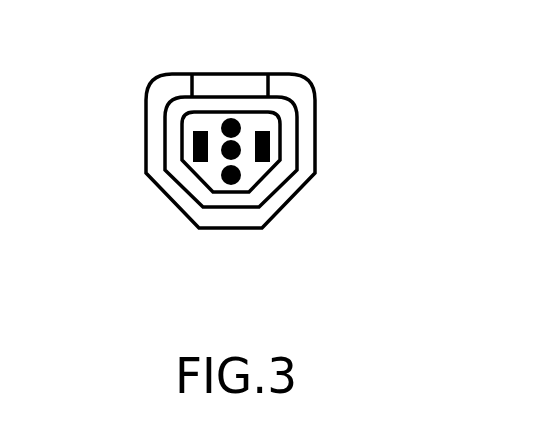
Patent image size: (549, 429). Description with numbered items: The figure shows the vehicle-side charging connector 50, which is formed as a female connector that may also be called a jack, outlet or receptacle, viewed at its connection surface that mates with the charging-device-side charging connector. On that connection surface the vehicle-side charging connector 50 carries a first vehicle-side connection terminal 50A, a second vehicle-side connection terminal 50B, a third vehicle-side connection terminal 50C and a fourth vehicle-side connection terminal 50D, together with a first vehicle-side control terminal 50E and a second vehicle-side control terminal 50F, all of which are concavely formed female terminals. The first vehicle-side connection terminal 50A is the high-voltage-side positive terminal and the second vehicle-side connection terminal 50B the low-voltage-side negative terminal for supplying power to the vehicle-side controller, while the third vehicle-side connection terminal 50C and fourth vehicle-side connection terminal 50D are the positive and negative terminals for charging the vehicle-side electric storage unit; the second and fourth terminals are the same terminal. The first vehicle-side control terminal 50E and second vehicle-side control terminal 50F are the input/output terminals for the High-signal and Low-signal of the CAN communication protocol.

The vehicle-side charging connector 50 is at (305, 92).
The first vehicle-side connection terminal 50A is at (229, 176).
The second vehicle-side connection terminal 50B is at (270, 149).
The third vehicle-side connection terminal 50C is at (193, 146).
The fourth vehicle-side connection terminal 50D is at (262, 146).
The first vehicle-side control terminal 50E is at (223, 157).
The second vehicle-side control terminal 50F is at (232, 118).